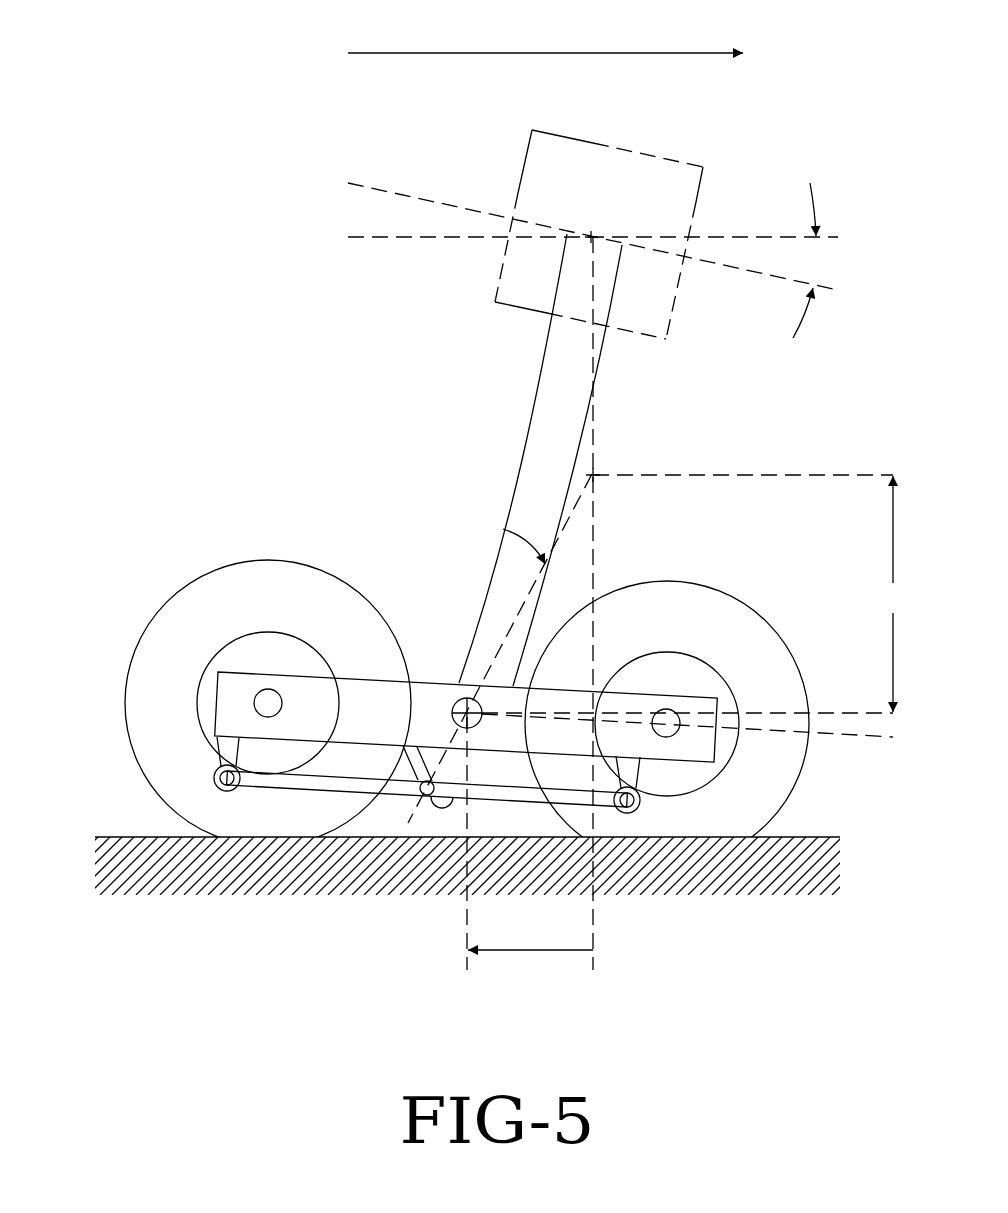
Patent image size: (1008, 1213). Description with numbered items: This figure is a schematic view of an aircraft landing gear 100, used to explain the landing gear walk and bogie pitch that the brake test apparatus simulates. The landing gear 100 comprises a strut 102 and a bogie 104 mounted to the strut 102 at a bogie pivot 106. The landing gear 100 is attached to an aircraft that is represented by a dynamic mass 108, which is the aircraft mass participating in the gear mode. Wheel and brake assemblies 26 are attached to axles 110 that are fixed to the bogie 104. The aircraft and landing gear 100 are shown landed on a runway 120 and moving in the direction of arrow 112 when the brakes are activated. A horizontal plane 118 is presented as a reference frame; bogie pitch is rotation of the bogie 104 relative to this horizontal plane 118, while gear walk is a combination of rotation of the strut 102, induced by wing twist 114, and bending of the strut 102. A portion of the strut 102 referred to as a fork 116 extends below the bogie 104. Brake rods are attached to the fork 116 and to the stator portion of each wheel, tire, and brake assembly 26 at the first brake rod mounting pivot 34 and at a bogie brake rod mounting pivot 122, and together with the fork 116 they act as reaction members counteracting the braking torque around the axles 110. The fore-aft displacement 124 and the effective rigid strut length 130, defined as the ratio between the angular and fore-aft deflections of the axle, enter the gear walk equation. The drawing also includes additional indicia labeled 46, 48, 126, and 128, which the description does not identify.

The wheel and brake assembly 26 is at (453, 697).
The first brake rod mounting pivot 34 is at (233, 787).
The link end bushing 46 is at (234, 769).
The lower pivot 48 is at (419, 794).
The aircraft landing gear 100 is at (333, 417).
The strut 102 is at (543, 428).
The bogie 104 is at (378, 722).
The bogie pivot 106 is at (462, 699).
The dynamic mass 108 is at (573, 205).
The axle 110 is at (257, 700).
The arrow 112 is at (545, 38).
The wing twist 114 is at (595, 260).
The fork 116 is at (438, 805).
The horizontal plane 118 is at (732, 237).
The runway 120 is at (115, 837).
The bogie brake rod mounting pivot 122 is at (417, 785).
The fore-aft displacement 124 is at (530, 843).
The steering axis 126 is at (593, 474).
The vertical reference line 128 is at (594, 578).
The effective rigid strut length 130 is at (893, 594).